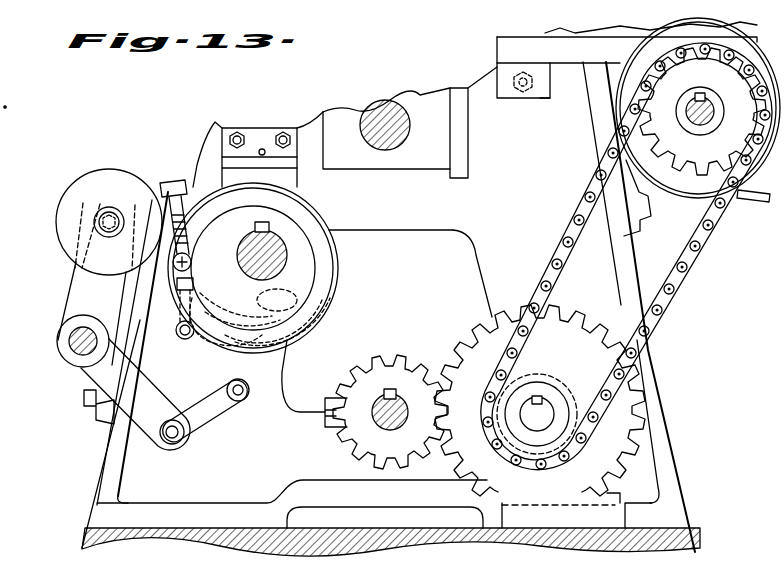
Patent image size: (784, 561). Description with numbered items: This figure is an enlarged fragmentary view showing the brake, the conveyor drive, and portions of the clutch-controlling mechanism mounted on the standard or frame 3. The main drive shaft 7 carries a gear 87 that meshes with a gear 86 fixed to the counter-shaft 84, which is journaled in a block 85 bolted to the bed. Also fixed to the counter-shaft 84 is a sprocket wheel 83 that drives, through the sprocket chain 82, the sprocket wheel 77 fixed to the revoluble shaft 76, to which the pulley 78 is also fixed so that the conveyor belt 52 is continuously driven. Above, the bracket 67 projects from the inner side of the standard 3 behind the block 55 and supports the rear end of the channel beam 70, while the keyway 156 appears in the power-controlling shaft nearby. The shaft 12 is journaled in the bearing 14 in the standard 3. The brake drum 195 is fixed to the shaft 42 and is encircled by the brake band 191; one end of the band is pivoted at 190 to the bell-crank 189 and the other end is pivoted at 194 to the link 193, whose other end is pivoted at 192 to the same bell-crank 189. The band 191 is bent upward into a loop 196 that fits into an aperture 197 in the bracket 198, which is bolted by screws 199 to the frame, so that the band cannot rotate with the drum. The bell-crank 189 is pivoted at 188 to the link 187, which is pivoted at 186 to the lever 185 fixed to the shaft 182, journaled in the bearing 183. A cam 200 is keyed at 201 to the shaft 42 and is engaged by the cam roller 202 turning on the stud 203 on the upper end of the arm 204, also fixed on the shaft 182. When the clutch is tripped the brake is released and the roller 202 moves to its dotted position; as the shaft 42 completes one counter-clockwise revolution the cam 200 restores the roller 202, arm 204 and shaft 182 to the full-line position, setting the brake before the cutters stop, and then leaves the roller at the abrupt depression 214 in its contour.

The standard 3 is at (667, 455).
The drive shaft 7 is at (378, 418).
The shaft 12 is at (384, 114).
The bearing 14 is at (430, 107).
The shaft 42 is at (287, 260).
The conveyor belts 52 is at (742, 204).
The block 55 is at (607, 117).
The bracket 67 is at (541, 98).
The channel beam 70 is at (523, 70).
The revoluble shaft 76 is at (695, 112).
The sprocket wheel 77 is at (702, 111).
The pulley 78 is at (753, 72).
The sprocket chain 82 is at (665, 317).
The sprocket wheel 83 is at (557, 375).
The counter-shaft 84 is at (535, 424).
The block 85 is at (577, 510).
The gear 86 is at (540, 400).
The gear 87 is at (420, 370).
The keyway 156 is at (650, 30).
The shaft 182 is at (70, 357).
The bearing 183 is at (100, 410).
The lever 185 is at (135, 394).
The pivot 186 is at (172, 444).
The link 187 is at (212, 413).
The pivot 188 is at (240, 400).
The bell-crank 189 is at (222, 362).
The pivot 190 is at (277, 299).
The brake band 191 is at (325, 213).
The pivot 192 is at (182, 340).
The link 193 is at (198, 286).
The pivot 194 is at (190, 263).
The brake drum 195 is at (253, 266).
The loop 196 is at (225, 168).
The aperture 197 is at (228, 152).
The bracket 198 is at (240, 172).
The screws 199 is at (283, 132).
The cam 200 is at (315, 322).
The key 201 is at (276, 226).
The cam roller 202 is at (109, 222).
The stud 203 is at (95, 214).
The arm 204 is at (85, 278).
The abrupt depression 214 is at (100, 292).